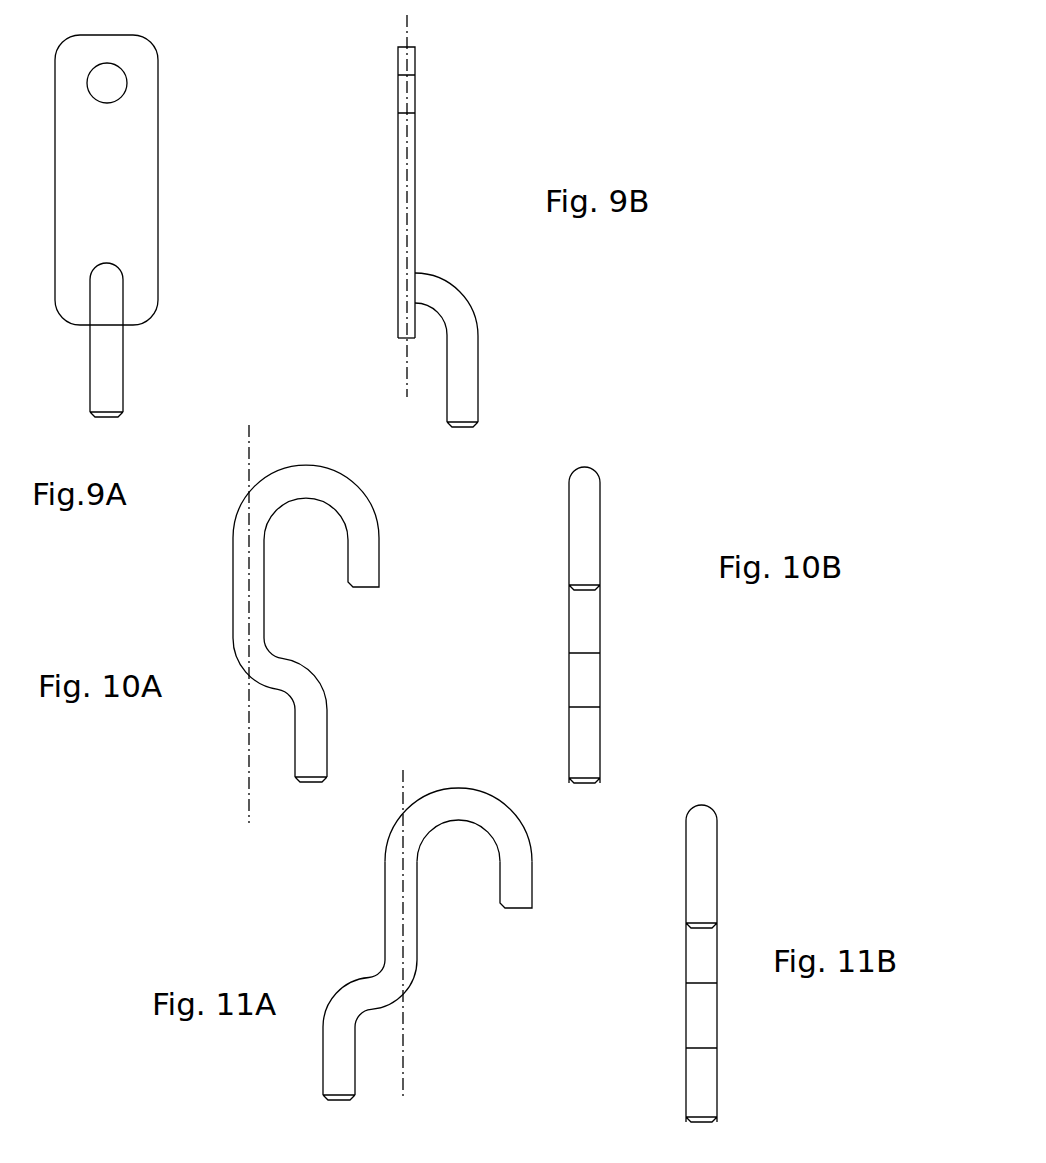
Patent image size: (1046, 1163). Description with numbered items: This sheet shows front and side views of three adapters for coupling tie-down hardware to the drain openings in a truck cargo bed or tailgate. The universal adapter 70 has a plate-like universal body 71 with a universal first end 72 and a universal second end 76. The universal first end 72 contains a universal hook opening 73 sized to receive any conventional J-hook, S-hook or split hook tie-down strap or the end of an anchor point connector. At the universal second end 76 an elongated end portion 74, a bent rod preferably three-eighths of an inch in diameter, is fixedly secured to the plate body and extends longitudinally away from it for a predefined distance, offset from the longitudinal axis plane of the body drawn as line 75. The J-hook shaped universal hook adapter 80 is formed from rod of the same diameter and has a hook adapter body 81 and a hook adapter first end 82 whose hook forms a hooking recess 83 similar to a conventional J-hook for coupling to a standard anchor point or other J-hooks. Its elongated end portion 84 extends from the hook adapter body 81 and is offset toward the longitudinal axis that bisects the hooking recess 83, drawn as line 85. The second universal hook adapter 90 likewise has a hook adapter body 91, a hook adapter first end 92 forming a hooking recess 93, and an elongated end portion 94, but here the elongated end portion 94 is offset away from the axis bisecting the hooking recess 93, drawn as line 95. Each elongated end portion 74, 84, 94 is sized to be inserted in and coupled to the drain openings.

In FIG. 9A, the universal adapter 70 is at (175, 218).
In FIG. 9B, the universal adapter 70 is at (428, 221).
In FIG. 9A, the universal body 71 is at (160, 195).
In FIG. 9B, the universal body 71 is at (415, 185).
In FIG. 9A, the universal first end 72 is at (157, 45).
In FIG. 9B, the universal first end 72 is at (417, 57).
In FIG. 9A, the universal hook opening 73 is at (115, 85).
In FIG. 9B, the universal hook opening 73 is at (417, 92).
In FIG. 9A, the elongated end portion 74 is at (123, 387).
In FIG. 9B, the elongated end portion 74 is at (481, 350).
In FIG. 9B, the longitudinal axis plane 75 is at (405, 372).
In FIG. 9A, the universal second end 76 is at (153, 318).
In FIG. 9B, the universal second end 76 is at (397, 330).
In FIG. 10A, the universal hook adapter 80 is at (326, 626).
In FIG. 10B, the universal hook adapter 80 is at (575, 620).
In FIG. 10A, the hook adapter body 81 is at (233, 585).
In FIG. 10B, the hook adapter body 81 is at (569, 628).
In FIG. 10A, the hook adapter first end 82 is at (362, 493).
In FIG. 10B, the hook adapter first end 82 is at (600, 482).
In FIG. 10A, the hooking recess 83 is at (322, 575).
In FIG. 10A, the elongated end portion 84 is at (327, 750).
In FIG. 10B, the elongated end portion 84 is at (600, 748).
In FIG. 10A, the longitudinal axis 85 is at (220, 626).
In FIG. 11A, the universal hook adapter 90 is at (436, 936).
In FIG. 11B, the universal hook adapter 90 is at (697, 959).
In FIG. 11A, the hook adapter body 91 is at (385, 908).
In FIG. 11B, the hook adapter body 91 is at (686, 960).
In FIG. 11A, the hook adapter first end 92 is at (523, 825).
In FIG. 11B, the hook adapter first end 92 is at (717, 818).
In FIG. 11A, the hooking recess 93 is at (477, 890).
In FIG. 11A, the elongated end portion 94 is at (323, 1070).
In FIG. 11B, the elongated end portion 94 is at (686, 1078).
In FIG. 11A, the longitudinal axis 95 is at (438, 936).